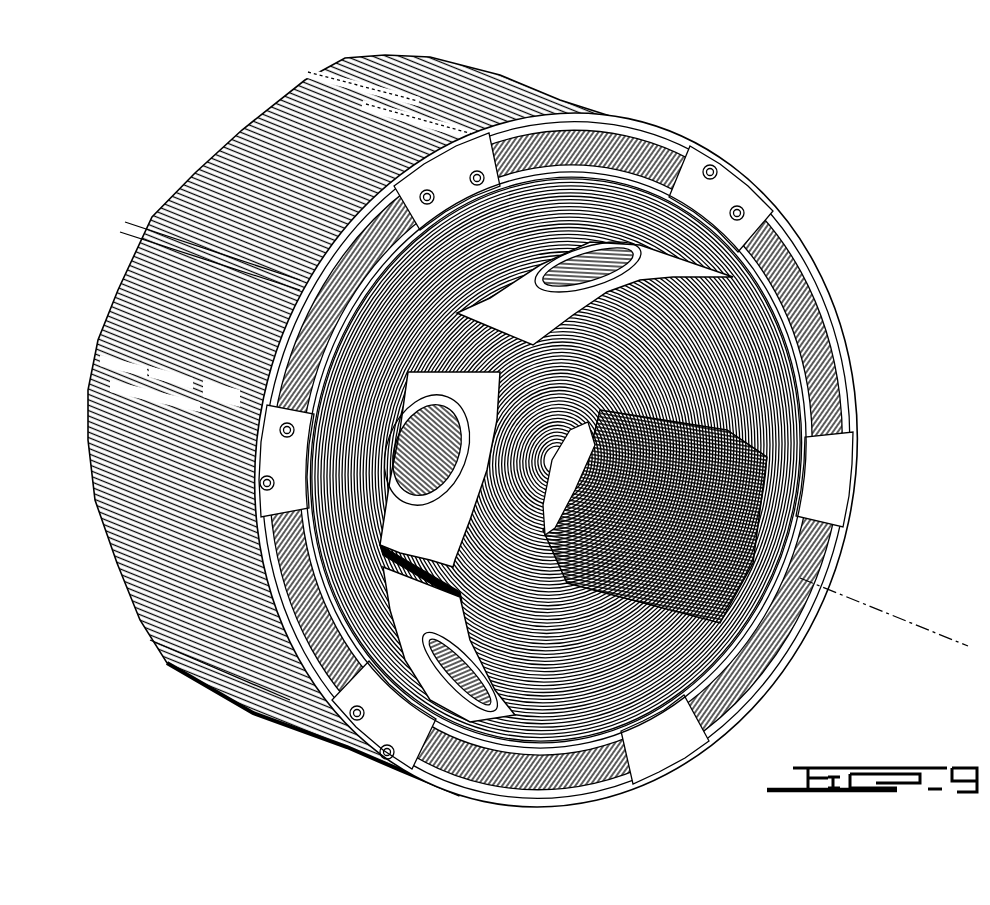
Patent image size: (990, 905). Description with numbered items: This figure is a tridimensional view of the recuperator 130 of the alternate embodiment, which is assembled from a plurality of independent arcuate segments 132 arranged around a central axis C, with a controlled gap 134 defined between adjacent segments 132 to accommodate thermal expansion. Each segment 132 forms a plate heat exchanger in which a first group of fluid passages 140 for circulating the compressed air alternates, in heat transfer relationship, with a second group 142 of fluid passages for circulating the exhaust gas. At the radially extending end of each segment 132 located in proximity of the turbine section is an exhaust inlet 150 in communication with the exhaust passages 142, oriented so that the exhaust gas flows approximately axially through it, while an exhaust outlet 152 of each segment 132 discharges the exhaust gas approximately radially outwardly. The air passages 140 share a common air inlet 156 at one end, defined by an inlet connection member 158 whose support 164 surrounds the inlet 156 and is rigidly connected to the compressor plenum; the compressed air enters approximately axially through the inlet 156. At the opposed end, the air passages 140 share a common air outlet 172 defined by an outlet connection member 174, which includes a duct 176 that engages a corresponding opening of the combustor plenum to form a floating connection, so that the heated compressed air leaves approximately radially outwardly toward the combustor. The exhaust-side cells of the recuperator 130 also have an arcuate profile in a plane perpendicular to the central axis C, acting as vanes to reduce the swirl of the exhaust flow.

The recuperator 130 is at (88, 261).
The arcuate segment 132 is at (194, 151).
The controlled gap 134 is at (162, 222).
The fluid passages for compressed air 140 is at (674, 160).
The exhaust gas fluid passages 142 is at (158, 653).
The exhaust inlet 150 is at (828, 364).
The exhaust outlet 152 is at (286, 166).
The air inlet 156 is at (580, 255).
The inlet connection member 158 is at (566, 105).
The support 164 is at (724, 178).
The air outlet 172 is at (669, 202).
The outlet connection member 174 is at (762, 262).
The duct 176 is at (758, 210).
The central axis C is at (893, 608).